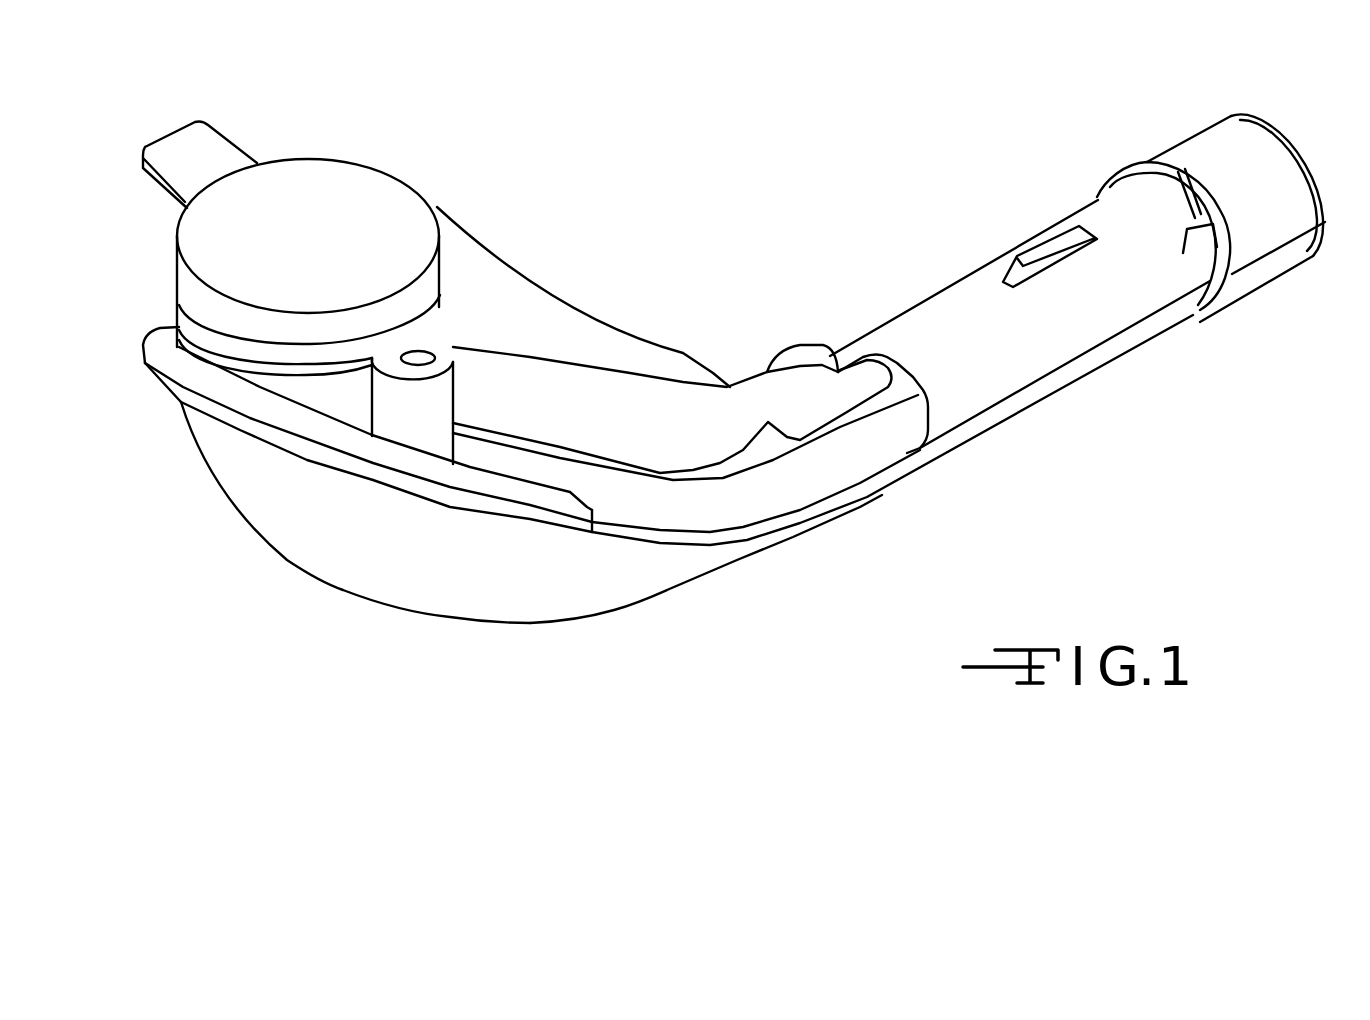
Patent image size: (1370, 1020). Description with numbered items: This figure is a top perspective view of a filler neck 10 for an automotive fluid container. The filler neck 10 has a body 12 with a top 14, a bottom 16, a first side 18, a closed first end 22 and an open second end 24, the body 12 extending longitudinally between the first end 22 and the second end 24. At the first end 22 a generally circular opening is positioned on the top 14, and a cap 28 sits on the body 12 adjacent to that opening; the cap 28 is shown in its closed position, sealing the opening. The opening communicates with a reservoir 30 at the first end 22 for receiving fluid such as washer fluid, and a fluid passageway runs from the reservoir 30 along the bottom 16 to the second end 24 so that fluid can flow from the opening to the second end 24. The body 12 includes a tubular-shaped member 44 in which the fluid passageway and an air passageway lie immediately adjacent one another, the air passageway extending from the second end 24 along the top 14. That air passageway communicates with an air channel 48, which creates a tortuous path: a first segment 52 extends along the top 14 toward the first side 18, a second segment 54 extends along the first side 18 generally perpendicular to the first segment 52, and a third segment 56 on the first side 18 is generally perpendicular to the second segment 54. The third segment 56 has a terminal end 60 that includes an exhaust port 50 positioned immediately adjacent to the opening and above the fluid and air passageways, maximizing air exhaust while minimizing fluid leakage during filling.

The filler neck 10 is at (707, 198).
The body 12 is at (680, 352).
The top 14 is at (797, 397).
The bottom 16 is at (668, 590).
The first side 18 is at (1043, 377).
The first end 22 is at (220, 493).
The second end 24 is at (1250, 113).
The cap 28 is at (340, 190).
The reservoir 30 is at (343, 590).
The tubular-shaped member 44 is at (940, 293).
The air channel 48 is at (773, 493).
The exhaust port 50 is at (418, 357).
The first segment 52 is at (913, 363).
The second segment 54 is at (617, 512).
The third segment 56 is at (435, 402).
The terminal end 60 is at (452, 348).